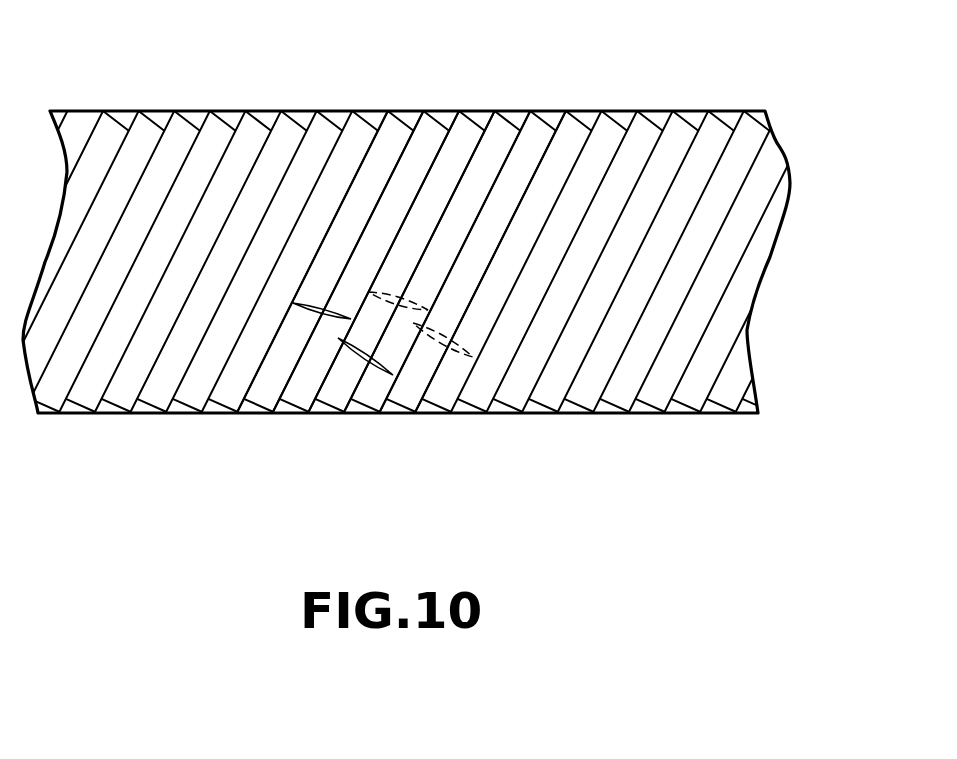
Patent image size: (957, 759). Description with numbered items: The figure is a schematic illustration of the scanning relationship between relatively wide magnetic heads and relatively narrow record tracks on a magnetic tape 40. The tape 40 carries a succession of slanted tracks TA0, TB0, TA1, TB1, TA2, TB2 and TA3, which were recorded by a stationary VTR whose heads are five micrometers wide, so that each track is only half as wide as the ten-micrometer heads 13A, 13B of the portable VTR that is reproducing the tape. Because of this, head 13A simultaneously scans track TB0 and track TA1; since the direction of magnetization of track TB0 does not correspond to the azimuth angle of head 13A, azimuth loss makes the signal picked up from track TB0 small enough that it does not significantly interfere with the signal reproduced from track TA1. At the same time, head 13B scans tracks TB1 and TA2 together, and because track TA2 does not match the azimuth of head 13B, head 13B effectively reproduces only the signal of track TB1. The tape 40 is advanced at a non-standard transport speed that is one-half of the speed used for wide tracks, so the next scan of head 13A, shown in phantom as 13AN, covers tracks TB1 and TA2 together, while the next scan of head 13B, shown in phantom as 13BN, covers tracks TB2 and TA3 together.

The tape 40 is at (717, 111).
The track TA0 is at (365, 111).
The track TB0 is at (402, 111).
The track TA1 is at (438, 111).
The track TB1 is at (472, 111).
The track TA2 is at (522, 111).
The track TB2 is at (560, 111).
The track TA3 is at (592, 111).
The magnetic head 13A is at (323, 322).
The magnetic head 13B is at (373, 367).
The next scan of head 13A 13AN is at (396, 311).
The next scan of head 13B 13BN is at (453, 358).